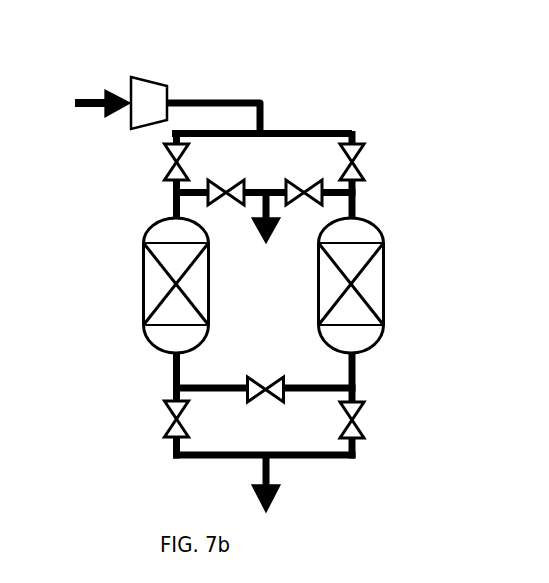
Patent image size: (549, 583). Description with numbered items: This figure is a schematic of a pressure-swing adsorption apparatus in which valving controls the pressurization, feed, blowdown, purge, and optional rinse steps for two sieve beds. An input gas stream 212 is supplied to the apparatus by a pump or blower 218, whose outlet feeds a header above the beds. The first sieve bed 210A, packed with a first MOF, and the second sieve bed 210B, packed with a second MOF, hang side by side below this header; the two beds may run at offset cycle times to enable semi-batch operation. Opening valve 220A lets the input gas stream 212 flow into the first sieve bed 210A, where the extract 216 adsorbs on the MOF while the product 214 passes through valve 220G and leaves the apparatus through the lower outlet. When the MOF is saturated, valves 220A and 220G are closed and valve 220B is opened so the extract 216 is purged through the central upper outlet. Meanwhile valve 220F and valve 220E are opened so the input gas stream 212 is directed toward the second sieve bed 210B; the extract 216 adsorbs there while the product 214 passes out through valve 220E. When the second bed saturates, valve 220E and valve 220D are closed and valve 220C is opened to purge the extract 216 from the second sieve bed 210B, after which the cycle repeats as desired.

The input gas stream 212 is at (77, 105).
The pump or blower 218 is at (148, 81).
The valve 220A is at (160, 162).
The valve 220B is at (242, 173).
The valve 220C is at (297, 173).
The valve 220D is at (366, 161).
The valve 220E is at (367, 418).
The valve 220F is at (273, 403).
The valve 220G is at (162, 420).
The first sieve bed 210A is at (138, 285).
The second sieve bed 210B is at (388, 285).
The extract 216 is at (266, 235).
The product 214 is at (242, 482).